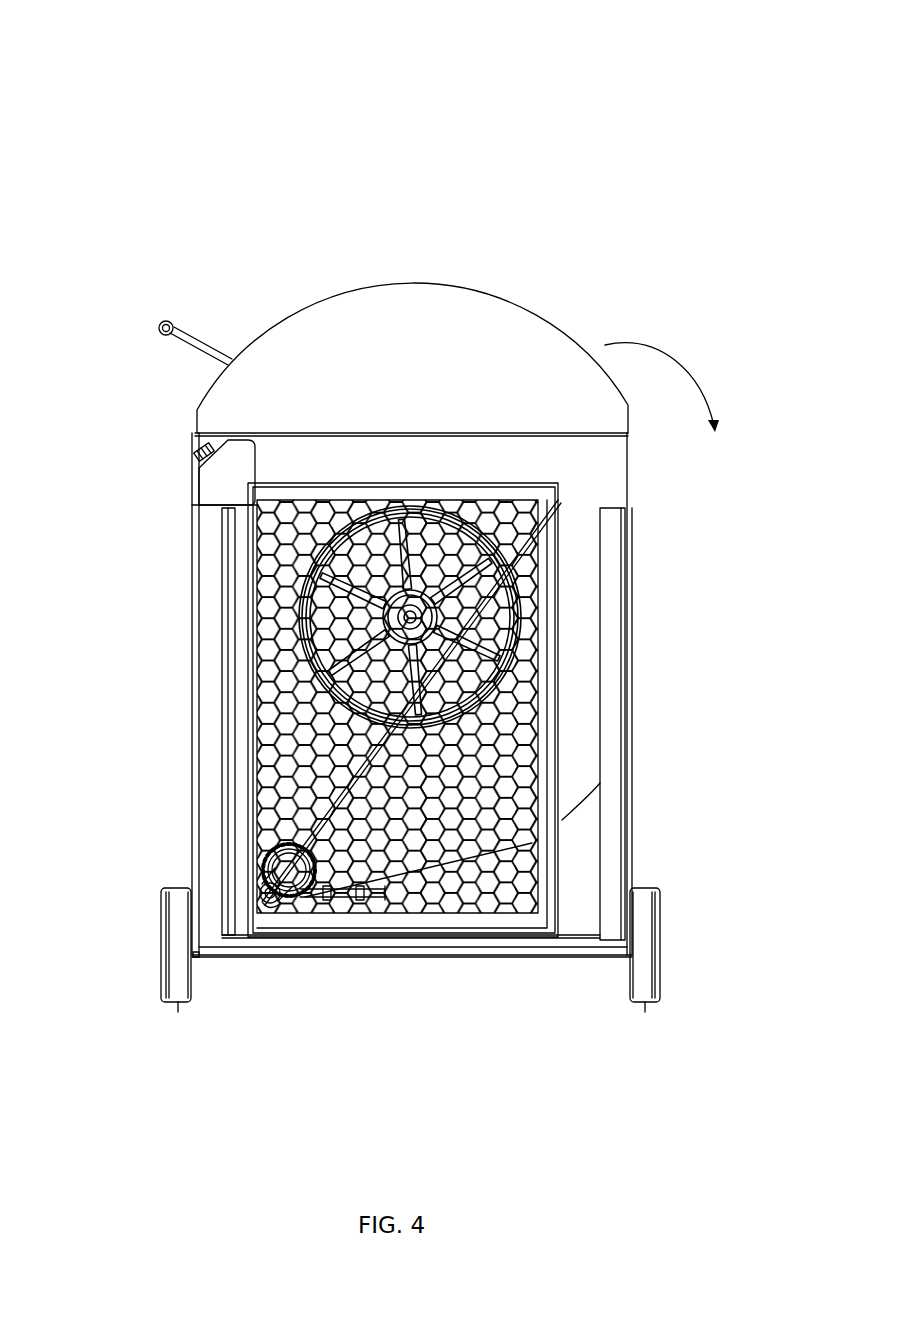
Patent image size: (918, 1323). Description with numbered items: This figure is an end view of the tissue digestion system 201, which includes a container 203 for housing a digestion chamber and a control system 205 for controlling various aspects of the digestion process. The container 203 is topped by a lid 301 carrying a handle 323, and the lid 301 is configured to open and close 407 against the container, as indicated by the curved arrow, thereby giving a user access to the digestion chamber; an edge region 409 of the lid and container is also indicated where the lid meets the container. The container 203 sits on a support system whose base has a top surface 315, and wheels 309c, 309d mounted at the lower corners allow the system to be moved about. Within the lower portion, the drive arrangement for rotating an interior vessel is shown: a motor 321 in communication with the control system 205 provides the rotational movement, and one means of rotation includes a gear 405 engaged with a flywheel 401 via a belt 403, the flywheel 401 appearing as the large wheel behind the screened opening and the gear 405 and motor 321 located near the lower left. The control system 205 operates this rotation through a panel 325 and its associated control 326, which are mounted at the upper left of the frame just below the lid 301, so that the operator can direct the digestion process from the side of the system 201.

The tissue digestion system 201 is at (748, 88).
The container 203 is at (603, 294).
The control system 205 is at (128, 565).
The lid 301 is at (418, 282).
The handle 323 is at (170, 321).
The panel 325 is at (197, 485).
The control 326 is at (198, 446).
The flywheel 401 is at (556, 510).
The belt 403 is at (272, 668).
The gear 405 is at (270, 890).
The open and close motion 407 is at (670, 347).
The hinge edge 409 is at (628, 438).
The top surface 315 is at (568, 957).
The motor 321 is at (318, 894).
The wheel 309c is at (178, 1012).
The wheel 309d is at (645, 1012).